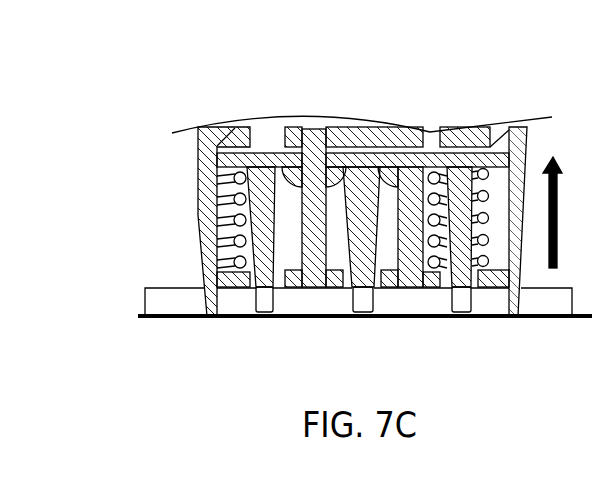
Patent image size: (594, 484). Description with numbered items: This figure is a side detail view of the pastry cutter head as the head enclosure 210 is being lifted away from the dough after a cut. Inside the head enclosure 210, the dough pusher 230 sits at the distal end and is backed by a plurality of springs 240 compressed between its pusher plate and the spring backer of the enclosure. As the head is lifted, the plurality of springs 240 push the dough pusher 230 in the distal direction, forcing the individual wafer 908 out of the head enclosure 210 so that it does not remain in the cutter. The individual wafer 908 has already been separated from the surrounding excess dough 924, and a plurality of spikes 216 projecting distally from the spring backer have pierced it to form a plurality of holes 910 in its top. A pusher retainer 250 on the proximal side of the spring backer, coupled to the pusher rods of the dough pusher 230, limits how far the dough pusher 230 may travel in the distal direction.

The head enclosure 210 is at (207, 145).
The plurality of spikes 216 is at (248, 207).
The dough pusher 230 is at (295, 133).
The pusher retainer 250 is at (438, 130).
The plurality of springs 240 is at (233, 243).
The excess dough 924 is at (592, 310).
The individual wafer 908 is at (238, 309).
The plurality of holes 910 is at (277, 312).